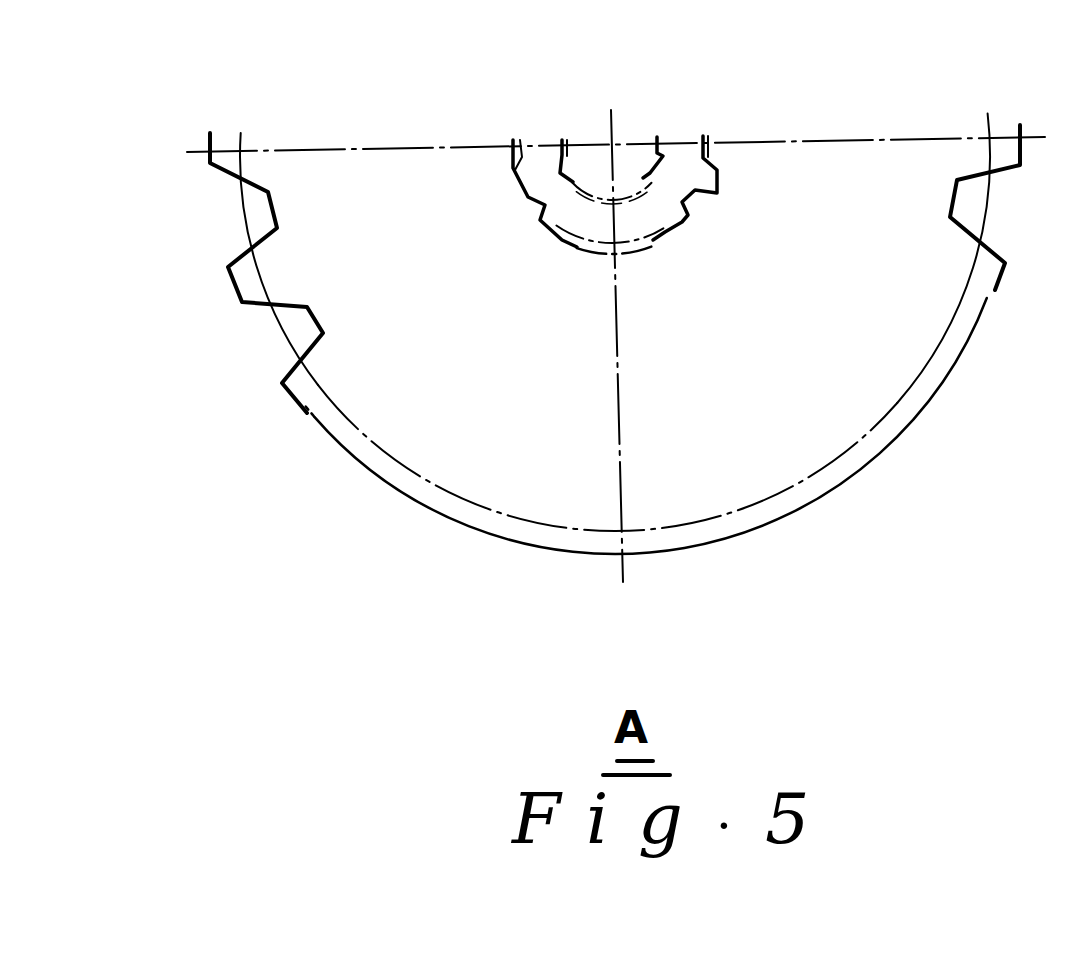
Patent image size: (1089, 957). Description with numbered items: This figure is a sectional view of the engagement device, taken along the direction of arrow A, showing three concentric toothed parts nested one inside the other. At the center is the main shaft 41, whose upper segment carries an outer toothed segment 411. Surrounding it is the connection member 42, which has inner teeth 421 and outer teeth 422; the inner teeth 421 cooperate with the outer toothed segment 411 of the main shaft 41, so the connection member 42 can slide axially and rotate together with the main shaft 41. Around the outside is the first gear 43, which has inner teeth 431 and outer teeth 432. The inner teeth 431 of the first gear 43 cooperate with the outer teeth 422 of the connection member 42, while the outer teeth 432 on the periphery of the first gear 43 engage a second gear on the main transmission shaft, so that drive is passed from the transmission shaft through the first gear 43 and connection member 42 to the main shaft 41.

The main shaft 41 is at (633, 153).
The outer toothed segment 411 is at (562, 174).
The inner teeth 421 is at (611, 198).
The connection member 42 is at (688, 160).
The outer teeth 422 is at (515, 196).
The inner teeth 431 is at (609, 235).
The first gear 43 is at (913, 177).
The outer teeth 432 is at (247, 284).